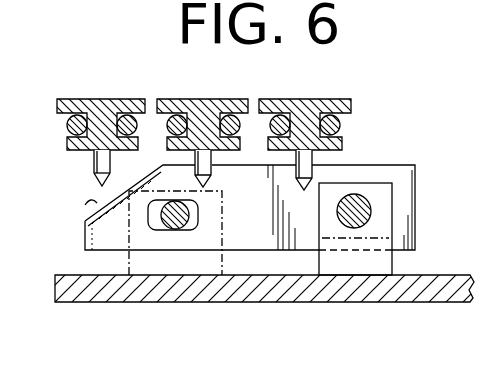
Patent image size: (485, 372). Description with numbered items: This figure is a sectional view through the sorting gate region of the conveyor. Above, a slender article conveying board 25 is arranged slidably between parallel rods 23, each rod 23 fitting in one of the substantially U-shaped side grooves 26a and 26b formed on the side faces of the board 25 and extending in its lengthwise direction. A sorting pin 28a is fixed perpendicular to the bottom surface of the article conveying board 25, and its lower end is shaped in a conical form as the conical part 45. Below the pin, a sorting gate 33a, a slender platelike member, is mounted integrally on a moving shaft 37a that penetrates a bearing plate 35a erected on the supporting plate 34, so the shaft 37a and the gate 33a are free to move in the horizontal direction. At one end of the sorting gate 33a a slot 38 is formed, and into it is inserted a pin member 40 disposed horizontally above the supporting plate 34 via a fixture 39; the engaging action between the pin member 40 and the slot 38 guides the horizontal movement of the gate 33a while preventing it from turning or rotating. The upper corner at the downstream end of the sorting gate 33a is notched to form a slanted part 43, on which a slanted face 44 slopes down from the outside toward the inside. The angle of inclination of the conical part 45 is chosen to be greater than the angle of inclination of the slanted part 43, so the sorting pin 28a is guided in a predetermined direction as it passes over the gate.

The parallel rod 23 is at (228, 120).
The article conveying board 25 is at (182, 119).
The side groove 26a is at (349, 121).
The side groove 26b is at (275, 115).
The sorting pin 28a is at (95, 170).
The conical part 45 is at (97, 183).
The slanted part 43 is at (86, 217).
The slanted face 44 is at (108, 207).
The fixture 39 is at (153, 240).
The slot 38 is at (199, 216).
The pin member 40 is at (180, 222).
The sorting gate 33a is at (270, 242).
The supporting plate 34 is at (344, 295).
The bearing plate 35a is at (375, 265).
The moving shaft 37a is at (359, 195).